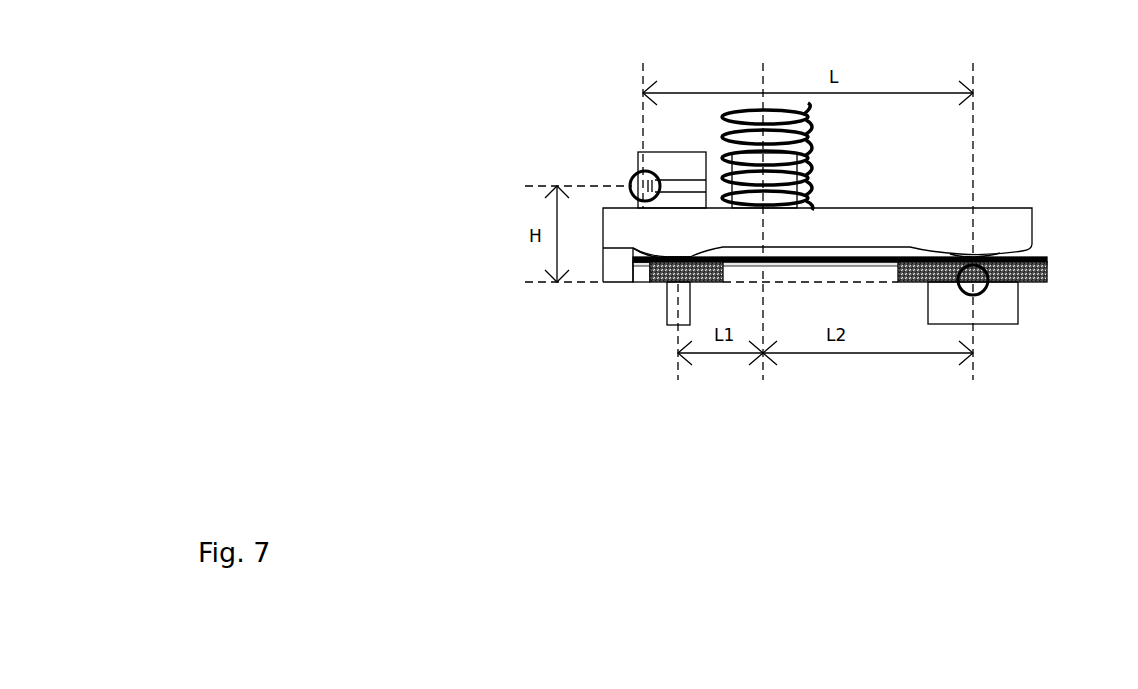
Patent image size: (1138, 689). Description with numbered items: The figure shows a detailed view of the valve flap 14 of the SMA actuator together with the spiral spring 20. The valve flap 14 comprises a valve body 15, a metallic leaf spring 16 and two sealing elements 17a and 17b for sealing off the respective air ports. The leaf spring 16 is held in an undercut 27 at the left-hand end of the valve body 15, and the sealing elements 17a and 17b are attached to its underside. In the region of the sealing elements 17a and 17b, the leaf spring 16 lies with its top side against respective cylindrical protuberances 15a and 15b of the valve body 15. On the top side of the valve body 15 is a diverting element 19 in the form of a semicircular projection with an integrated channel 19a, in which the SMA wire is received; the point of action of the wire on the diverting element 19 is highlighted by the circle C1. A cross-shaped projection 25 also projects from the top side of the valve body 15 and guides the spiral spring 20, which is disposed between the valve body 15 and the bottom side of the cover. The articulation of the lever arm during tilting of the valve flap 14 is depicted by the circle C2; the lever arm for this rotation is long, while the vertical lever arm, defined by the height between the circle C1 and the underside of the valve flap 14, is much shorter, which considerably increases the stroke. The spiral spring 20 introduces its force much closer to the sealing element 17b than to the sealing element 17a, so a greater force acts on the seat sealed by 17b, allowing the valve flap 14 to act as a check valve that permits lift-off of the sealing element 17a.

The valve flap 14 is at (1004, 207).
The valve body 15 is at (850, 212).
The cylindrical protuberance 15a is at (960, 255).
The cylindrical protuberance 15b is at (690, 258).
The metallic leaf spring 16 is at (888, 258).
The sealing element 17a is at (1047, 266).
The sealing element 17b is at (662, 283).
The diverting element 19 is at (640, 154).
The channel 19a is at (680, 190).
The spiral spring 20 is at (763, 110).
The cross-shaped projection 25 is at (748, 155).
The undercut 27 is at (636, 252).
The circle C1 is at (630, 180).
The circle C2 is at (984, 292).